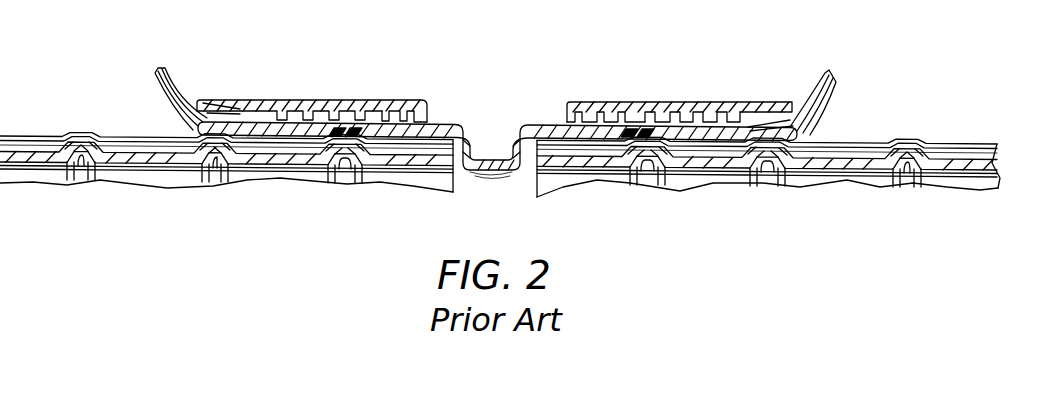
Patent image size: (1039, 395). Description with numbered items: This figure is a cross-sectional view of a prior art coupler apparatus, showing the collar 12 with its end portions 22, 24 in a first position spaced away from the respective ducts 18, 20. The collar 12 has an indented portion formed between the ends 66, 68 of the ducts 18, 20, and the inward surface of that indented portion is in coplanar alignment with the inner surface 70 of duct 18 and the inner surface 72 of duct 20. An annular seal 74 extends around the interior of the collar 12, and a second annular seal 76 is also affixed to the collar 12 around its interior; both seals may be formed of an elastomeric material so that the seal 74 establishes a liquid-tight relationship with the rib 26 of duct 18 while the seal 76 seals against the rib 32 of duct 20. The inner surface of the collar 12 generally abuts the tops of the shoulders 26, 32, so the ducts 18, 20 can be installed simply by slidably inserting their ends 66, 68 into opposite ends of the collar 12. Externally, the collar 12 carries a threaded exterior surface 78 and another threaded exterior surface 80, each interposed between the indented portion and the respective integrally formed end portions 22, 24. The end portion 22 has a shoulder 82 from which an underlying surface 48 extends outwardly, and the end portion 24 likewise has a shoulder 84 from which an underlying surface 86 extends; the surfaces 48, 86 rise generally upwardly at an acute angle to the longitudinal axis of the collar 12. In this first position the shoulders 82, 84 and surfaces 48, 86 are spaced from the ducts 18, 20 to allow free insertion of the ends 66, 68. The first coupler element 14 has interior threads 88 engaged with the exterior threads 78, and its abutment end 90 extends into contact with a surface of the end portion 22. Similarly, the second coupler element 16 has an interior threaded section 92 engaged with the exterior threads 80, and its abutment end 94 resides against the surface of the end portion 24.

The collar 12 is at (432, 127).
The first coupler element 14 is at (245, 100).
The second coupler element 16 is at (753, 108).
The duct 18 is at (290, 168).
The duct 20 is at (492, 160).
The end portion 22 is at (167, 73).
The end portion 24 is at (834, 74).
The rib 26 is at (221, 150).
The rib 32 is at (777, 178).
The underlying surface 48 is at (152, 90).
The end 66 is at (455, 193).
The end 68 is at (537, 198).
The inner surface 70 is at (167, 163).
The inner surface 72 is at (837, 170).
The annular seal 74 is at (352, 183).
The second annular seal 76 is at (643, 192).
The threaded exterior surface 78 is at (400, 108).
The threaded exterior surface 80 is at (602, 110).
The shoulder 82 is at (181, 120).
The shoulder 84 is at (823, 122).
The underlying surface 86 is at (842, 99).
The interior threads 88 is at (318, 106).
The abutment end 90 is at (192, 97).
The interior threaded section 92 is at (668, 112).
The abutment end 94 is at (787, 120).